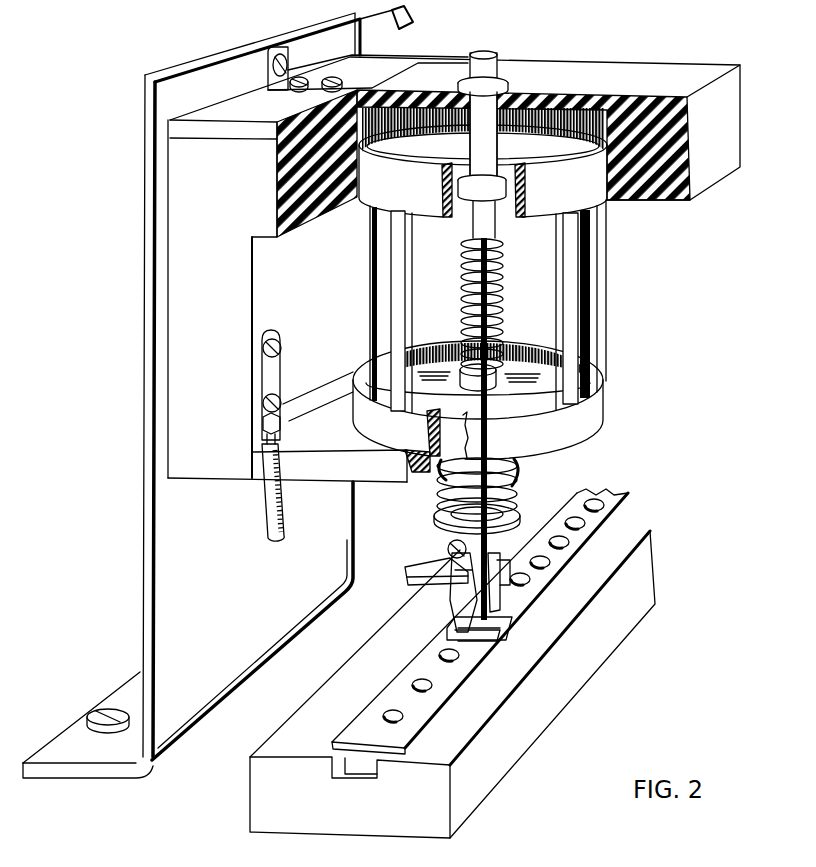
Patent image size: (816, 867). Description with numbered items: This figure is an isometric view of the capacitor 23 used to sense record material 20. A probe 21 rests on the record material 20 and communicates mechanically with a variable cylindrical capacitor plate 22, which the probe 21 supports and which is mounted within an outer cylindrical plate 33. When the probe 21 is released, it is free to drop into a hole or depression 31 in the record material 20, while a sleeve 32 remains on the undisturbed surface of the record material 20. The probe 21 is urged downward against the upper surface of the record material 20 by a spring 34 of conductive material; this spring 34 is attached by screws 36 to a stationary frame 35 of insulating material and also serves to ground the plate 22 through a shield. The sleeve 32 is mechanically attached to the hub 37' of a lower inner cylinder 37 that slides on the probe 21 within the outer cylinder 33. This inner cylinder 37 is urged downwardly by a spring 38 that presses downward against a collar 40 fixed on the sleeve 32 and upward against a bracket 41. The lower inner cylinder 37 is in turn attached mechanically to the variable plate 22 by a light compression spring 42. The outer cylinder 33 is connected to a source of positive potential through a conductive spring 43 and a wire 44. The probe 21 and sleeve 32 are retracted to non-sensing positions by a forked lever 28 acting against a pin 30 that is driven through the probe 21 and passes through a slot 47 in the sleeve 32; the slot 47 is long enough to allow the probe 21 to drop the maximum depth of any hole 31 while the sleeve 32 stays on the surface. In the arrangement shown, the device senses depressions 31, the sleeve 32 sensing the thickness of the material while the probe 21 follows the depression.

The record material 20 is at (616, 498).
The probe 21 is at (499, 66).
The variable cylindrical capacitor plate 22 is at (443, 228).
The capacitor 23 is at (636, 328).
The forked lever 28 is at (425, 565).
The pin 30 is at (446, 583).
The hole or depression 31 is at (518, 586).
The sleeve 32 is at (512, 562).
The outer cylindrical plate 33 is at (603, 200).
The spring 34 is at (441, 55).
The stationary frame 35 is at (568, 72).
The screws 36 is at (296, 89).
The lower inner cylinder 37 is at (479, 345).
The hub 37' is at (500, 349).
The spring 38 is at (442, 470).
The collar 40 is at (438, 514).
The bracket 41 is at (334, 470).
The light compression spring 42 is at (503, 292).
The conductive spring 43 is at (324, 390).
The wire 44 is at (266, 516).
The slot 47 is at (448, 551).